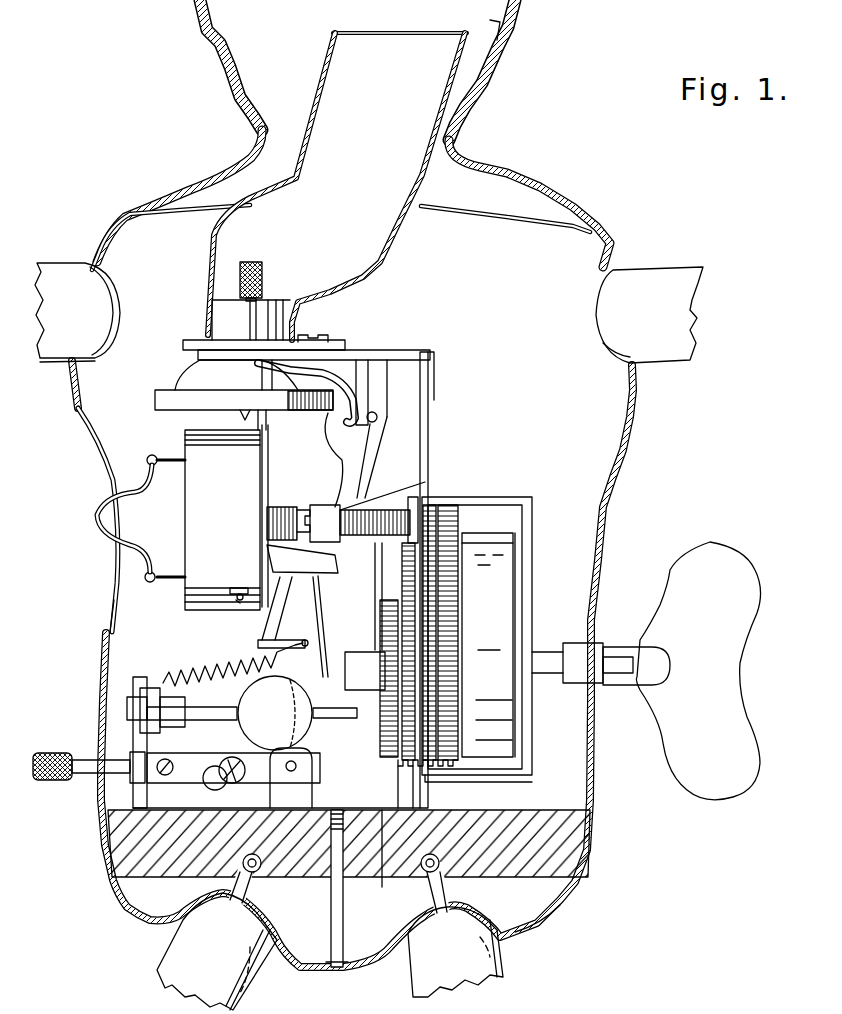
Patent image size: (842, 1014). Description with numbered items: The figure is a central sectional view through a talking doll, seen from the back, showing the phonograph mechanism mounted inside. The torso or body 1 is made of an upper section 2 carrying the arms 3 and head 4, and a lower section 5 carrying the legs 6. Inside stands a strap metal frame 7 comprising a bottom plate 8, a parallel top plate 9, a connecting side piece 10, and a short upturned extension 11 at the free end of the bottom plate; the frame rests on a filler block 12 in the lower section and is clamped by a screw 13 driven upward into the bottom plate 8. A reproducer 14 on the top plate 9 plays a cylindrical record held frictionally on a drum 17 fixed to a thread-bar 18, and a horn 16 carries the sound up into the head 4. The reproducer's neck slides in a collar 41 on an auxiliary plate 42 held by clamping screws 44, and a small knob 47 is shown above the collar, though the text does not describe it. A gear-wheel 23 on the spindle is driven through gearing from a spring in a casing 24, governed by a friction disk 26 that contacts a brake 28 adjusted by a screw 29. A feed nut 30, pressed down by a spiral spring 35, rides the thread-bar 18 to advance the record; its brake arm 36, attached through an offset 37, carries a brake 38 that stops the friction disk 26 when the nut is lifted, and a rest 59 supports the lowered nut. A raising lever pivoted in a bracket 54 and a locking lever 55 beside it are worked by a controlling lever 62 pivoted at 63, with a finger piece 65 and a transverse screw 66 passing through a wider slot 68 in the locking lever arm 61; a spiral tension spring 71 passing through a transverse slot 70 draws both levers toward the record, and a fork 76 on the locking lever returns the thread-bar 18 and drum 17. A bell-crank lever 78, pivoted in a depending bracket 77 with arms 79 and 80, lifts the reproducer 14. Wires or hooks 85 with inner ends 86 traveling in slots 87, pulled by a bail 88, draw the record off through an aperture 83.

The torso or body 1 is at (632, 433).
The upper section 2 is at (575, 510).
The arms 3 is at (92, 293).
The head 4 is at (497, 53).
The lower section 5 is at (557, 913).
The legs 6 is at (330, 951).
The strap metal frame 7 is at (432, 368).
The bottom plate 8 is at (385, 863).
The top plate 9 is at (358, 353).
The side piece 10 is at (420, 430).
The extension 11 is at (135, 728).
The filler block 12 is at (112, 870).
The screw 13 is at (333, 922).
The reproducer 14 is at (187, 380).
The horn 16 is at (325, 65).
The drum 17 is at (217, 435).
The thread-bar 18 is at (282, 507).
The gear-wheel 23 is at (420, 510).
The casing 24 is at (488, 645).
The friction disk 26 is at (380, 775).
The brake 28 is at (360, 718).
The screw 29 is at (440, 775).
The feed nut 30 is at (325, 506).
The spiral spring 35 is at (410, 503).
The brake arm 36 is at (377, 678).
The offset 37 is at (391, 596).
The brake 38 is at (365, 671).
The collar 41 is at (258, 313).
The auxiliary plate 42 is at (338, 341).
The clamping screws 44 is at (318, 334).
The knob 47 is at (262, 265).
The bracket 54 is at (291, 778).
The locking lever 55 is at (287, 608).
The rest 59 is at (388, 497).
The bell-crank arm 61 is at (243, 770).
The controlling lever 62 is at (233, 768).
The pivot 63 is at (162, 720).
The finger piece 65 is at (55, 782).
The transverse screw 66 is at (228, 760).
The wider slot 68 is at (213, 770).
The transverse slot 70 is at (289, 655).
The spiral tension spring 71 is at (200, 665).
The fork 76 is at (333, 557).
The depending bracket 77 is at (377, 392).
The bell-crank lever 78 is at (382, 461).
The arm 79 is at (333, 597).
The arm 80 is at (315, 377).
The aperture 83 is at (110, 612).
The wires or hooks 85 is at (178, 462).
The inner ends 86 is at (238, 603).
The slots 87 is at (248, 588).
The bail 88 is at (97, 513).